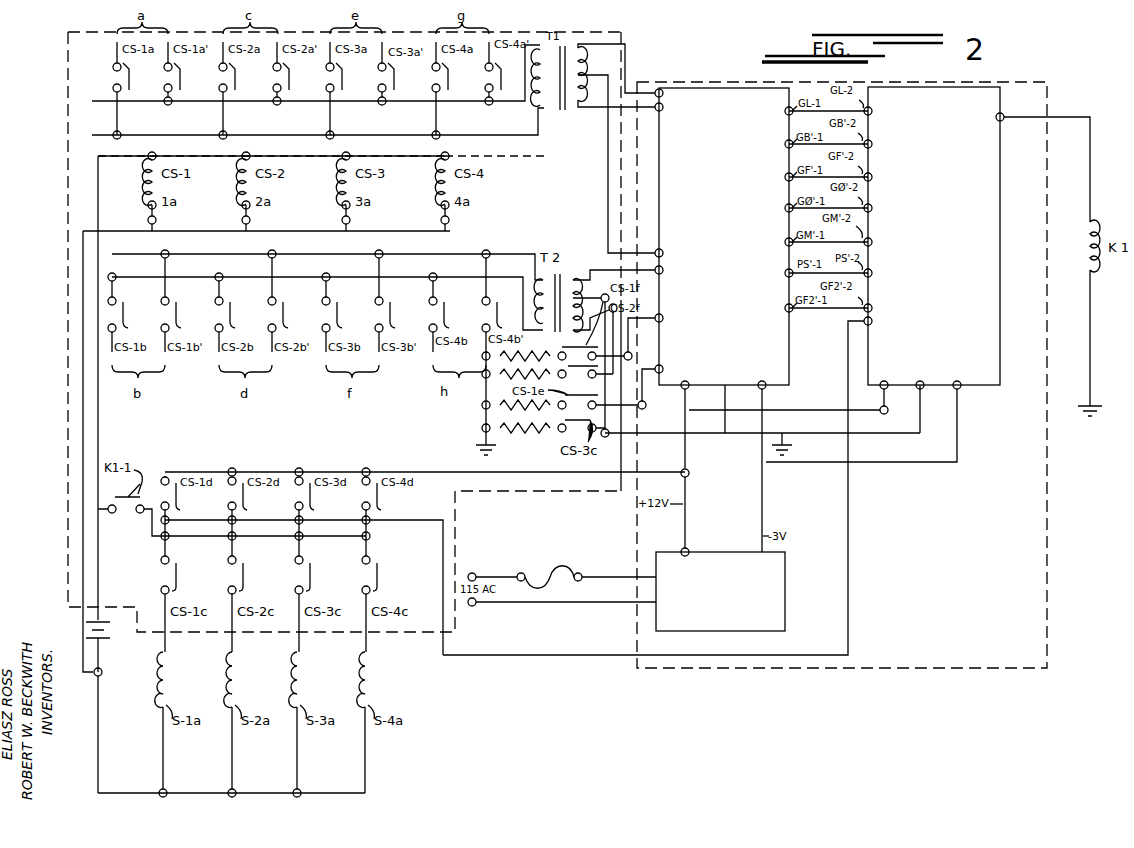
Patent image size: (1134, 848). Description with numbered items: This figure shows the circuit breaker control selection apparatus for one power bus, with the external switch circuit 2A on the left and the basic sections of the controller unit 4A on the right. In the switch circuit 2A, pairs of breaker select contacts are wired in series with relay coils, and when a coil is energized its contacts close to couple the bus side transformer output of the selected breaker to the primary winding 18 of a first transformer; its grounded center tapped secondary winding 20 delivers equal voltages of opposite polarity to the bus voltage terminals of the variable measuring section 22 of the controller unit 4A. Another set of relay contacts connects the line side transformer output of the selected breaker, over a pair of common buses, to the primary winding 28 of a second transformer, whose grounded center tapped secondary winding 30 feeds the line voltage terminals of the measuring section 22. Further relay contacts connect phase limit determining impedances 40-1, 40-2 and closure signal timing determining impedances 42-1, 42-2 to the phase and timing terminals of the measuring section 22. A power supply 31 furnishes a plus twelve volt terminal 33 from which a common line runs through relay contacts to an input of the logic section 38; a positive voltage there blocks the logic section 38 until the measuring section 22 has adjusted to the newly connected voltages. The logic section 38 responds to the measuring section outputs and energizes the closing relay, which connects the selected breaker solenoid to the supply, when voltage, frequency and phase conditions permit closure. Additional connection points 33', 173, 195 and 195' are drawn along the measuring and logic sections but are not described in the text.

The external switch circuit 2A is at (61, 54).
The controller unit 4A is at (1012, 75).
The primary winding of transformer T1 18 is at (538, 105).
The grounded center tapped secondary winding of transformer T1 20 is at (583, 62).
The variable measuring section 22 is at (740, 88).
The primary winding of transformer T2 28 is at (522, 286).
The grounded center tapped secondary winding of transformer T2 30 is at (576, 284).
The power supply 31 is at (723, 552).
The plus 12 volt terminal 33 is at (664, 512).
The measuring section terminal 33' is at (673, 424).
The logic section 38 is at (930, 88).
The phase limit determining impedance 40-1 is at (484, 409).
The phase limit determining impedance 40-2 is at (489, 447).
The circuit breaker closure signal timing determining impedance 42-1 is at (484, 360).
The circuit breaker closure signal timing determining impedance 42-2 is at (484, 378).
The logic section terminal 173 is at (885, 381).
The logic section terminal 195 is at (865, 408).
The measuring section terminal 195' is at (750, 454).